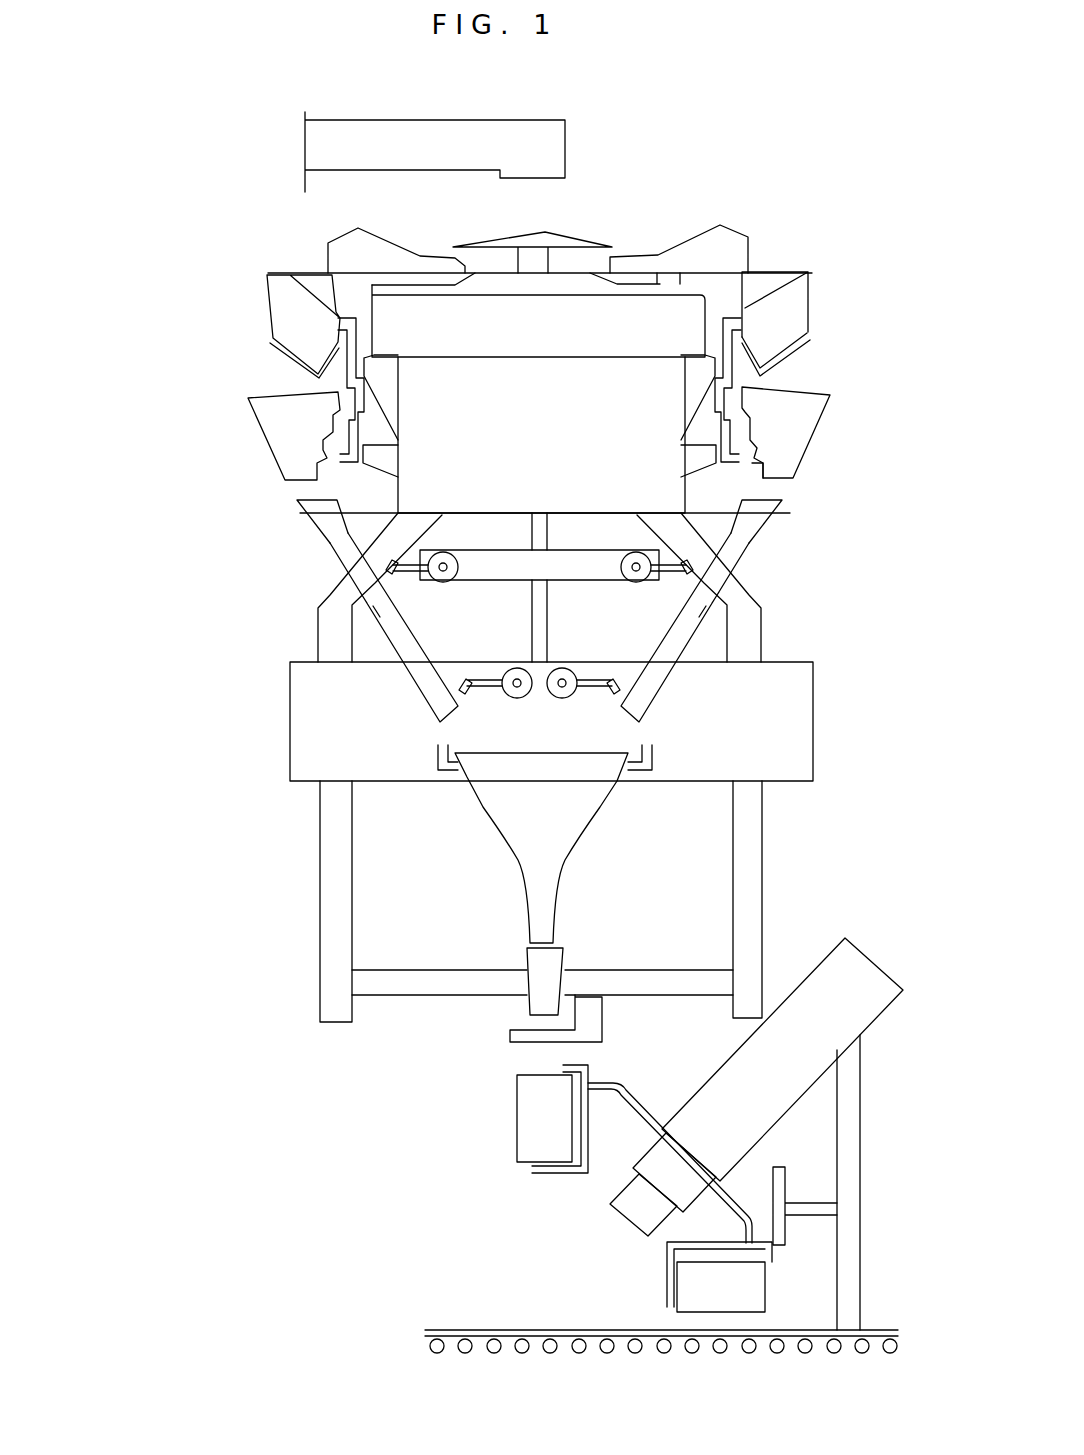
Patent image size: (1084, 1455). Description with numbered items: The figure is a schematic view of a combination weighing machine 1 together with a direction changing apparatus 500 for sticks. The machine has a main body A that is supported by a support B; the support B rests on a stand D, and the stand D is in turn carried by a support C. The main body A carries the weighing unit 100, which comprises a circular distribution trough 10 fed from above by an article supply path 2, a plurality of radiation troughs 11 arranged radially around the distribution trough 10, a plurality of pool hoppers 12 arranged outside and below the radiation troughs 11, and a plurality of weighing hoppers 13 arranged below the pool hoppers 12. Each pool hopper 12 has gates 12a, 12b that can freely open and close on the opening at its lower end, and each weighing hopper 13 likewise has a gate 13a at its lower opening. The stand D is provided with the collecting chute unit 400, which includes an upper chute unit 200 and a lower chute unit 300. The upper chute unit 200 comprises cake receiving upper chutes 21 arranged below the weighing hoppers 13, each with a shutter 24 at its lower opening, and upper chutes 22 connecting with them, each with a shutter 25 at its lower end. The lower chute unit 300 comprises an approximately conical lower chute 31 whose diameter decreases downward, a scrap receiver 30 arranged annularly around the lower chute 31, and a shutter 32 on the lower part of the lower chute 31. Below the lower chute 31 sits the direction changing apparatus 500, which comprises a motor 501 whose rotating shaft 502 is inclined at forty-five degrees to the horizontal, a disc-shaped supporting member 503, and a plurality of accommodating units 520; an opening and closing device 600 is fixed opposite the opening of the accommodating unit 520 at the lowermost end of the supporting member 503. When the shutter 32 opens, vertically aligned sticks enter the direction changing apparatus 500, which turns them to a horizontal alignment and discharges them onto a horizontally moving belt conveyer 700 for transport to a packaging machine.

The combination weighing machine 1 is at (830, 207).
The article supply path 2 is at (553, 150).
The circular distribution trough 10 is at (555, 238).
The radiation trough 11 is at (692, 257).
The pool hopper 12 is at (580, 329).
The gate 12a is at (792, 332).
The gate 12b is at (792, 353).
The weighing hopper 13 is at (570, 445).
The gate 13a is at (795, 478).
The cake receiving upper chute 21 is at (300, 507).
The upper chute 22 is at (383, 619).
The shutter 24 is at (390, 578).
The shutter 25 is at (455, 685).
The scrap receiver 30 is at (437, 762).
The lower chute 31 is at (512, 795).
The shutter 32 is at (520, 1034).
The weighing unit 100 is at (215, 240).
The upper chute unit 200 is at (208, 503).
The lower chute unit 300 is at (208, 740).
The collecting chute unit 400 is at (128, 585).
The direction changing apparatus 500 is at (406, 1068).
The motor 501 is at (846, 975).
The rotating shaft 502 is at (622, 1217).
The disc-shaped supporting member 503 is at (628, 1092).
The accommodating unit 520 is at (510, 1128).
The opening and closing device 600 is at (786, 1178).
The belt conveyer 700 is at (497, 1325).
The main body A is at (541, 420).
The support B is at (754, 624).
The support C is at (753, 898).
The stand D is at (806, 716).